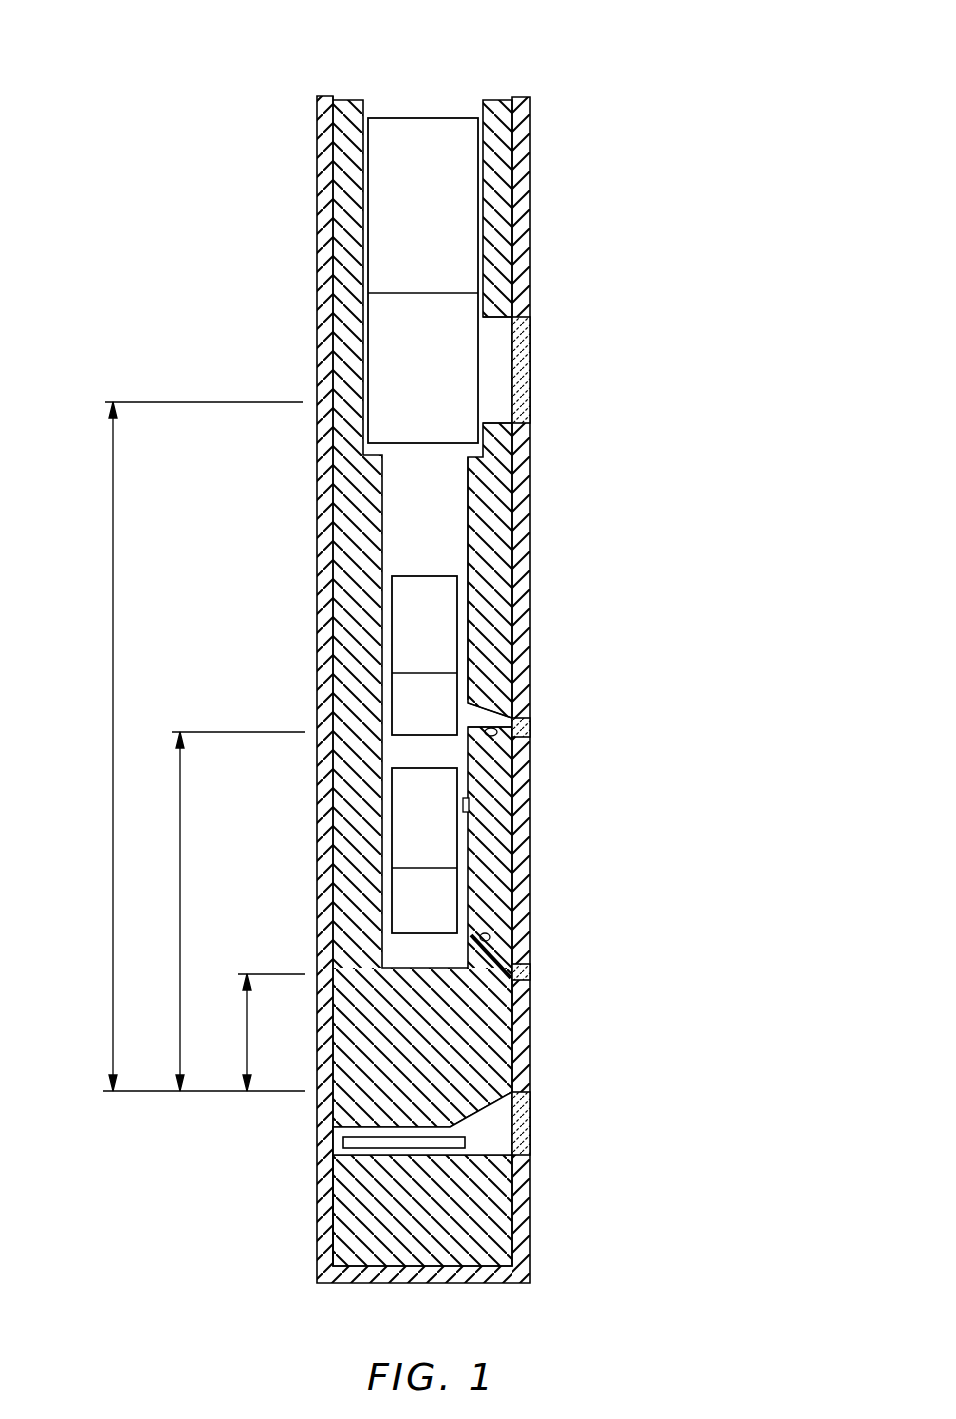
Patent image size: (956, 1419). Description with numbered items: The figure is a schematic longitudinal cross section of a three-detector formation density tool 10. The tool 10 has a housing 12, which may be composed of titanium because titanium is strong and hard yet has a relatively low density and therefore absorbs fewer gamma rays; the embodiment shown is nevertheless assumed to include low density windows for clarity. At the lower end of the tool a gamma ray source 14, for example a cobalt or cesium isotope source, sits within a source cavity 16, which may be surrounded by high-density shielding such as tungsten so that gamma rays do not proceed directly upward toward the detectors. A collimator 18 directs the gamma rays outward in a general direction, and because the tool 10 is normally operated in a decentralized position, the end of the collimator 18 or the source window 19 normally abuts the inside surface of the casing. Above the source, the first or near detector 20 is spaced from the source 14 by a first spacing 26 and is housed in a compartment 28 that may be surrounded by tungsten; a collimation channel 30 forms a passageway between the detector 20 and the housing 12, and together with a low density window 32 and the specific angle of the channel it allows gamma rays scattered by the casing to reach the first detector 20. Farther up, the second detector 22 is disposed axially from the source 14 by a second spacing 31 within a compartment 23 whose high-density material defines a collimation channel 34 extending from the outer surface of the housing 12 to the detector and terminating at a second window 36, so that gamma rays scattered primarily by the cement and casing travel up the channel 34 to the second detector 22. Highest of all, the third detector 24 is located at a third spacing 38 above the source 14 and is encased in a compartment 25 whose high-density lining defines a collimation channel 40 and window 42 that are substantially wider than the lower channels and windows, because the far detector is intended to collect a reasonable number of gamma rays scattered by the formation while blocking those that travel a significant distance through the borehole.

The formation density tool 10 is at (506, 643).
The housing 12 is at (530, 1052).
The gamma ray source 14 is at (510, 1146).
The source cavity 16 is at (490, 1155).
The collimator 18 is at (512, 1100).
The source window 19 is at (479, 1143).
The first detector 20 is at (457, 883).
The second detector 22 is at (457, 650).
The compartment 23 is at (463, 600).
The third detector 24 is at (478, 250).
The compartment 25 is at (482, 110).
The first spacing 26 is at (256, 1032).
The compartment 28 is at (469, 813).
The collimation channel 30 is at (490, 938).
The second spacing 31 is at (224, 911).
The low density window 32 is at (525, 975).
The collimation channel 34 is at (495, 735).
The second window 36 is at (521, 722).
The third spacing 38 is at (188, 746).
The collimation channel 40 is at (493, 318).
The window 42 is at (523, 388).